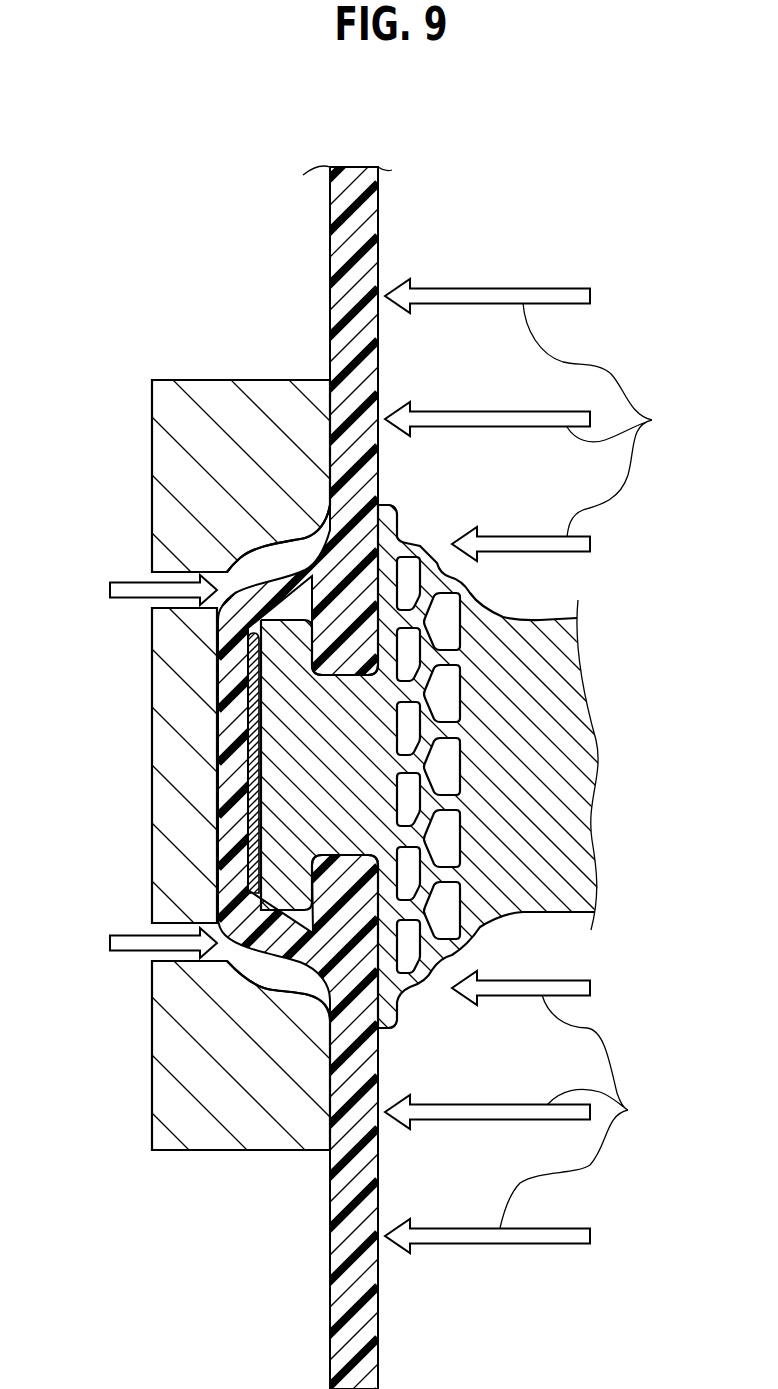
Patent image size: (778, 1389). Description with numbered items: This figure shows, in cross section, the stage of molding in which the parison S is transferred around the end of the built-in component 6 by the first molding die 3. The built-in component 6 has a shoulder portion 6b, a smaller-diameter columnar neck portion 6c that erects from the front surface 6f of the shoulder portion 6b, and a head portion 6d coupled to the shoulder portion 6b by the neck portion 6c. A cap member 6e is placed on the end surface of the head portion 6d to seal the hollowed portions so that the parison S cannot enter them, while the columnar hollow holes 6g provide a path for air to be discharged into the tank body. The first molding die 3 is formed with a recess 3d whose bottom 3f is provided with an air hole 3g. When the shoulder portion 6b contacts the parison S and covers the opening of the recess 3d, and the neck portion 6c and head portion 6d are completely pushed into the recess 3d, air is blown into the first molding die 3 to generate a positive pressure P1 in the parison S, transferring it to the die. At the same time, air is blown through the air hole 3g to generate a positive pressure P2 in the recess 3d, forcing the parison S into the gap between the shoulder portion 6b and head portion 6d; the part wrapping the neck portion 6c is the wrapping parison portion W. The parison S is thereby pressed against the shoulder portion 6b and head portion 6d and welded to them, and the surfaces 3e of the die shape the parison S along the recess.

The parison S is at (370, 228).
The first molding die 3 is at (203, 380).
The recess 3d is at (277, 552).
The abutting portion 3e is at (300, 520).
The bottom 3f is at (217, 823).
The air hole 3g is at (172, 607).
The built-in component 6 is at (549, 603).
The shoulder portion 6b is at (387, 1027).
The neck portion 6c is at (327, 768).
The head portion 6d is at (240, 668).
The cap member 6e is at (250, 720).
The front surface 6f is at (382, 500).
The columnar hollow holes 6g is at (407, 805).
The positive pressure P1 is at (543, 766).
The positive pressure P2 is at (125, 583).
The wrapping parison portion W is at (267, 963).